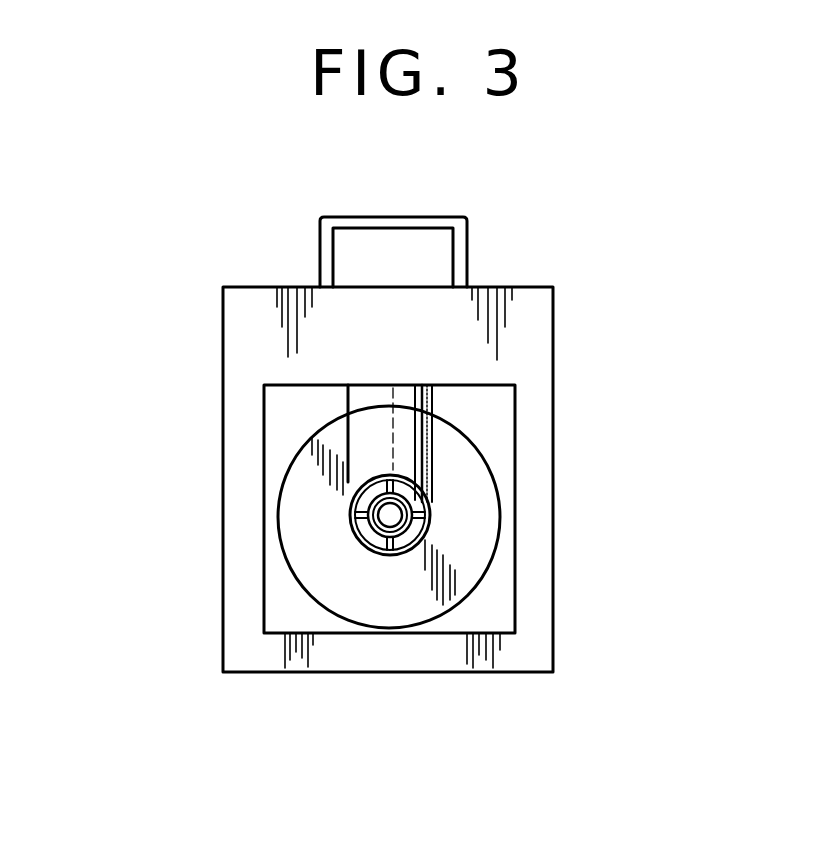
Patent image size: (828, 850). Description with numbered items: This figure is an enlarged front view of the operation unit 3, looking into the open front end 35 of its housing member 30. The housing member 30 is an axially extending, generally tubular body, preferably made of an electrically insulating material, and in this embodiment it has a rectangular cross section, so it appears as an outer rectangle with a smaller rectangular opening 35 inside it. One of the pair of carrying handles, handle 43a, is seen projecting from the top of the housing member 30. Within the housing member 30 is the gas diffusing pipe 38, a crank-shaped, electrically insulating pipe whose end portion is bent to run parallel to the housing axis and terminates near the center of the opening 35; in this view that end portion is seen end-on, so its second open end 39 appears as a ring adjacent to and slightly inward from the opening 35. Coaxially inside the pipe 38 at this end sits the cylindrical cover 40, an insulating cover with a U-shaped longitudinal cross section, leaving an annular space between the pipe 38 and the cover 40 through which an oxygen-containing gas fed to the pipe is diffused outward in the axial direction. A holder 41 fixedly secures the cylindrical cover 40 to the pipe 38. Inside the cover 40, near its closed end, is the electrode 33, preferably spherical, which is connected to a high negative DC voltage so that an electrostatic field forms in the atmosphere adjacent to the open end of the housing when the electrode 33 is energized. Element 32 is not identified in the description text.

The operation unit 3 is at (523, 287).
The housing member 30 is at (224, 632).
The inner panel / window 32 is at (442, 612).
The electrode 33 is at (378, 540).
The front end 35 is at (504, 571).
The gas diffusing pipe 38 is at (400, 422).
The second open end 39 is at (412, 533).
The cylindrical cover 40 is at (352, 495).
The holder 41 is at (432, 490).
The handle 43a is at (508, 195).